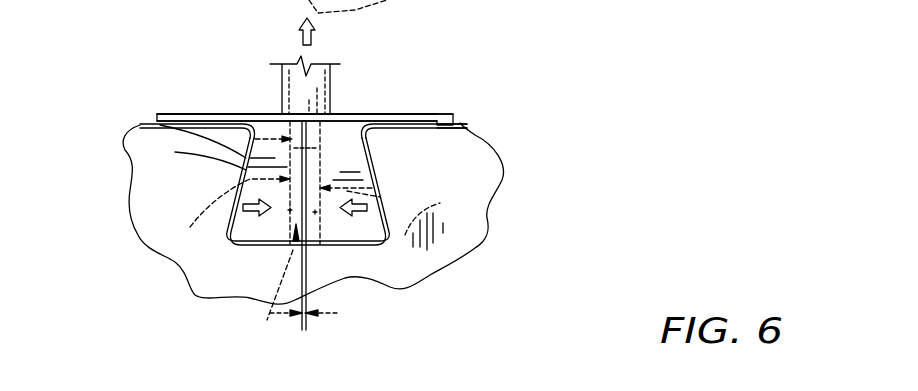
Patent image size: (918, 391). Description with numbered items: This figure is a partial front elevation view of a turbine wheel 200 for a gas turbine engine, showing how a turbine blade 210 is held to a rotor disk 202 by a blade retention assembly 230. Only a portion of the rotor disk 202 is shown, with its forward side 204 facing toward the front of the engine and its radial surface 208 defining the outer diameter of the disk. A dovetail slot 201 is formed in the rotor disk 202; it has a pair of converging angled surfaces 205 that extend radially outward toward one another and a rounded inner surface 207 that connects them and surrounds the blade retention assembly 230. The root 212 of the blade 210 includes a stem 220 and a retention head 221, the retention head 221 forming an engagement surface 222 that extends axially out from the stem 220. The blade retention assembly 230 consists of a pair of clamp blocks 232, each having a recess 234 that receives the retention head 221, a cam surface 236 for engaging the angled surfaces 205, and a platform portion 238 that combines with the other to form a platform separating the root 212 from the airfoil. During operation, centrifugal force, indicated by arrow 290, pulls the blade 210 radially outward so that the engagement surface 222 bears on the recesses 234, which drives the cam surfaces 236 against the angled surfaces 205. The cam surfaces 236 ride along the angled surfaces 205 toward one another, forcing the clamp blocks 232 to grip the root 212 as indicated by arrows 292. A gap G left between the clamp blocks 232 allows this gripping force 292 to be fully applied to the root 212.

The turbine wheel 200 is at (522, 90).
The dovetail slot 201 is at (347, 247).
The rotor disk 202 is at (547, 183).
The forward side 204 is at (486, 240).
The converging angled surfaces 205 is at (177, 126).
The rounded inner surface 207 is at (332, 337).
The radial surface 208 is at (460, 127).
The turbine blade 210 is at (345, 52).
The root 212 is at (273, 108).
The stem 220 is at (207, 122).
The retention head 221 is at (270, 305).
The engagement surface 222 is at (271, 225).
The blade retention assembly 230 is at (215, 177).
The clamp block 232 is at (221, 182).
The recess 234 is at (390, 197).
The cam surface 236 is at (428, 153).
The platform portion 238 is at (167, 112).
The centrifugal force arrow 290 is at (300, 32).
The gripping force arrow 292 is at (253, 213).
The gap G is at (304, 318).